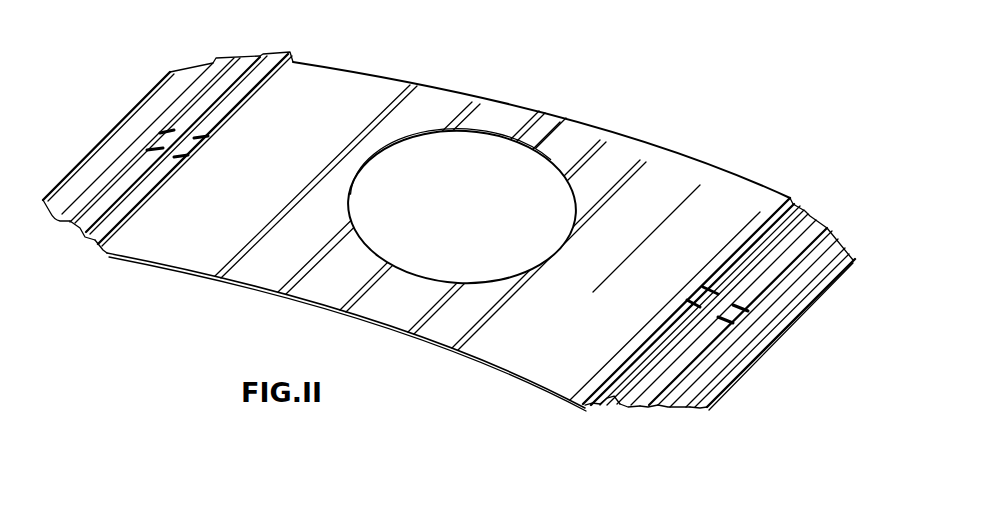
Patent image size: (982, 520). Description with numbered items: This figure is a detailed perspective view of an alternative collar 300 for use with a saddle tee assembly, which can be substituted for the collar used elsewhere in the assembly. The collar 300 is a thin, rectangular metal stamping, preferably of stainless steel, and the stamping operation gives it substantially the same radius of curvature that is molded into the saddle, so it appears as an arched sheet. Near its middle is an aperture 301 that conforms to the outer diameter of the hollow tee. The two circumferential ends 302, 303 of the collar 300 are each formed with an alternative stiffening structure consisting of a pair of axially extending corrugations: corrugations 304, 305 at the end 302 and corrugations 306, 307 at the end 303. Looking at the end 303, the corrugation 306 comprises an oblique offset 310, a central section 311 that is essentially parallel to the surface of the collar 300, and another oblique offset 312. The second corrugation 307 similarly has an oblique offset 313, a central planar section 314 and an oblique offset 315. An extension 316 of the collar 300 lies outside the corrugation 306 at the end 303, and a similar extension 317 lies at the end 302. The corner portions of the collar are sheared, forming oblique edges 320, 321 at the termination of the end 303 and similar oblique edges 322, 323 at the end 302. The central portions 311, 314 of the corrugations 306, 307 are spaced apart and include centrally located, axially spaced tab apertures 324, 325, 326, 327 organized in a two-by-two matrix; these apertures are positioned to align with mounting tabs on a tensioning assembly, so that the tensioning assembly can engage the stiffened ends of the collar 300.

The collar 300 is at (598, 108).
The aperture 301 is at (532, 148).
The circumferential end 302 is at (143, 98).
The circumferential end 303 is at (753, 363).
The corrugation 304 is at (88, 212).
The corrugation 305 is at (108, 232).
The corrugation 306 is at (707, 407).
The second corrugation 307 is at (613, 387).
The oblique offset 310 is at (660, 407).
The central section 311 is at (648, 407).
The oblique offset 312 is at (633, 407).
The oblique offset 313 is at (615, 397).
The central planar section 314 is at (597, 400).
The oblique offset 315 is at (580, 407).
The extension 316 is at (724, 386).
The extension 317 is at (173, 75).
The oblique edge 320 is at (692, 407).
The oblique edge 321 is at (843, 240).
The oblique edge 322 is at (58, 222).
The oblique edge 323 is at (207, 62).
The tab aperture 324 is at (687, 300).
The tab aperture 325 is at (707, 287).
The tab aperture 326 is at (760, 350).
The tab aperture 327 is at (773, 330).